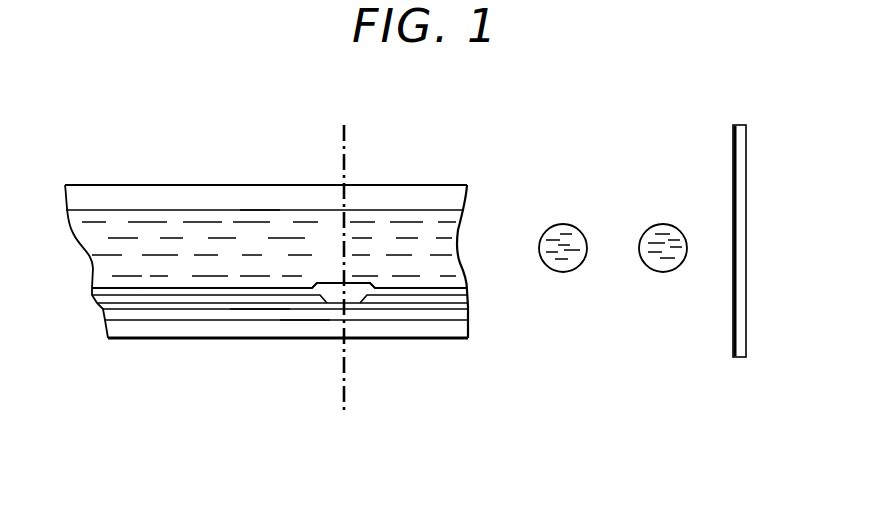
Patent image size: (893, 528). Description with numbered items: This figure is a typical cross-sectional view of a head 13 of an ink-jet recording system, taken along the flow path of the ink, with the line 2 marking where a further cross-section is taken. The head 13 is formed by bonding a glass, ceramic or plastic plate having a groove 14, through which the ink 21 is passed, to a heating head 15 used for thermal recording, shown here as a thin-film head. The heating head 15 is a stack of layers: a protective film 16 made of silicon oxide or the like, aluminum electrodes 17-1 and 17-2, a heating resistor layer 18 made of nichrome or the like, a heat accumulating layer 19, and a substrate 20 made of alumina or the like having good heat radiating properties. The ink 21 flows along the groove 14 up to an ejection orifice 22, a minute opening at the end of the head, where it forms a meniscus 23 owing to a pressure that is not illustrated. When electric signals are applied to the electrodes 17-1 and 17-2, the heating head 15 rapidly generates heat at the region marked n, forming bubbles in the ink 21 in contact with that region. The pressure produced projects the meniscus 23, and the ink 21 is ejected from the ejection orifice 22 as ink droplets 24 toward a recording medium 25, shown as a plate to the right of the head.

The head 13 is at (194, 186).
The groove 14 is at (257, 212).
The heating head 15 is at (70, 287).
The protective film 16 is at (133, 296).
The aluminum electrode 17-1 is at (185, 304).
The aluminum electrode 17-2 is at (438, 304).
The heating resistor layer 18 is at (260, 312).
The heat accumulating layer 19 is at (307, 321).
The substrate 20 is at (393, 331).
The ink 21 is at (108, 222).
The ejection orifice 22 is at (470, 268).
The meniscus 23 is at (460, 250).
The ink droplets 24 is at (690, 218).
The recording medium 25 is at (733, 190).
The heat generating region n is at (333, 283).
The section line 2- 2 is at (344, 269).